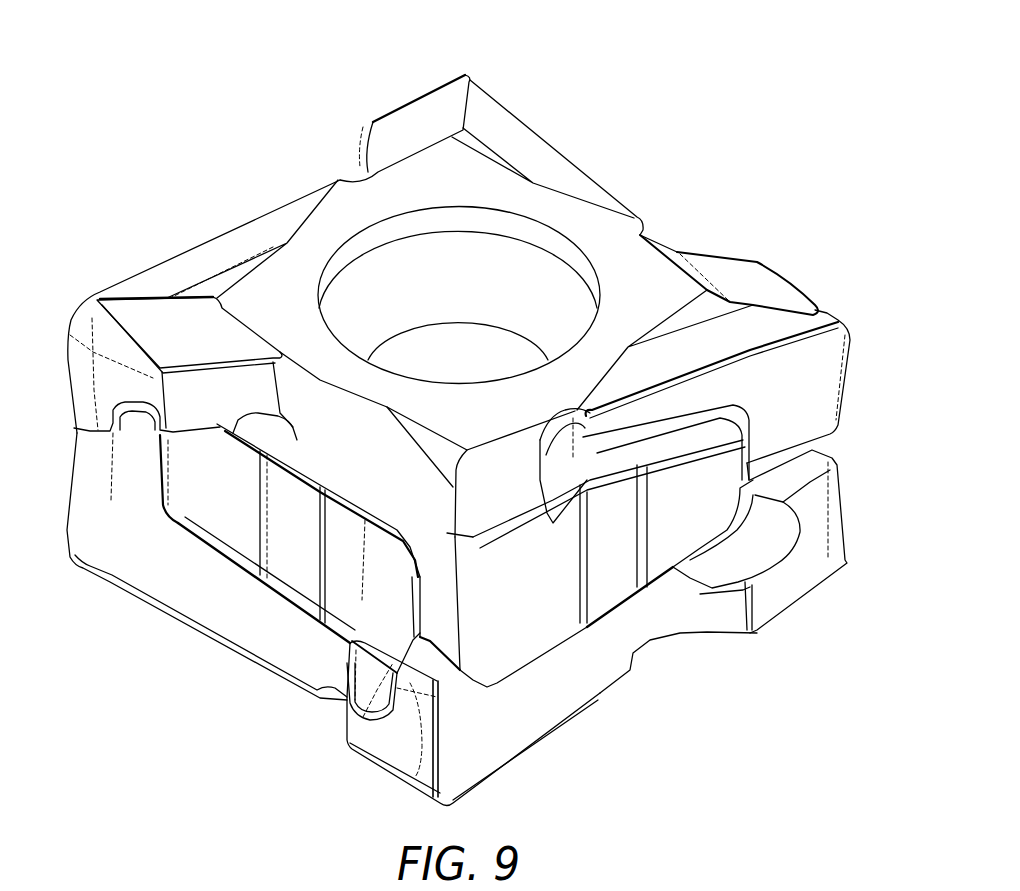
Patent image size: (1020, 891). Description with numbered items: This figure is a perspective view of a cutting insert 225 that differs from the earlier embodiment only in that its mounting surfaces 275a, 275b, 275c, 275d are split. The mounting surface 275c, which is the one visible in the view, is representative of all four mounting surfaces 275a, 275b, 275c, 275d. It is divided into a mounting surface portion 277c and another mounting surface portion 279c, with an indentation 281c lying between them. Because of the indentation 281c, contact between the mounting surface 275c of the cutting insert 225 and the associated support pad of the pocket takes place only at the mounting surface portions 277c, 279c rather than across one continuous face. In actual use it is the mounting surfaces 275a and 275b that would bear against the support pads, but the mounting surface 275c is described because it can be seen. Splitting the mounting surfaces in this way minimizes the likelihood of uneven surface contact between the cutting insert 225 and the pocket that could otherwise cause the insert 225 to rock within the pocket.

The cutting insert 225 is at (640, 52).
The mounting surface 275a is at (632, 168).
The mounting surface 275b is at (287, 175).
The mounting surface 275c is at (324, 576).
The mounting surface 275d is at (672, 535).
The mounting surface portion 277c is at (193, 507).
The mounting surface portion 279c is at (357, 610).
The indentation 281c is at (280, 557).